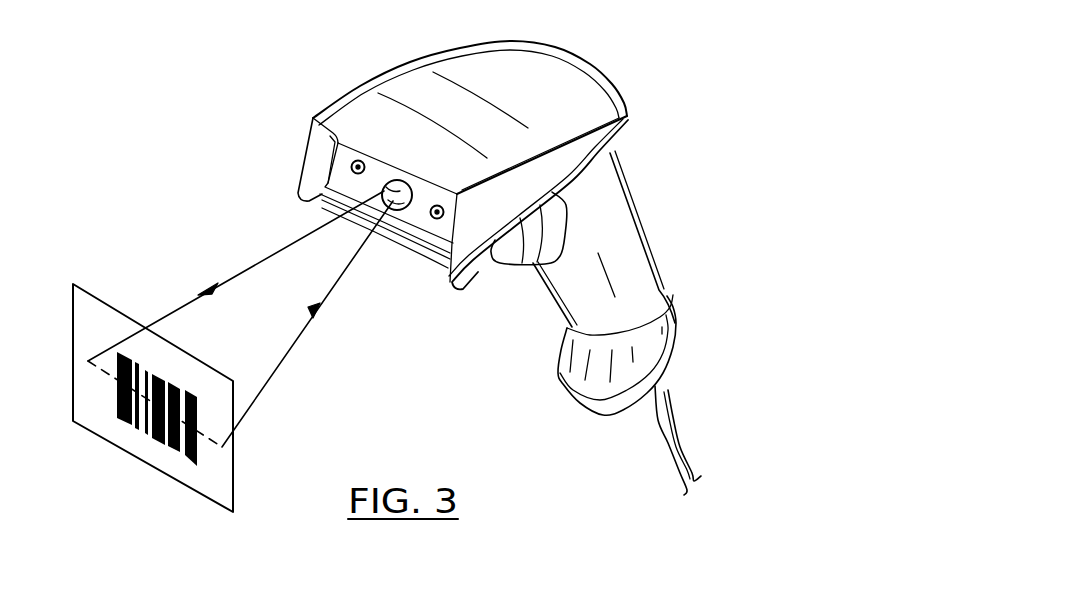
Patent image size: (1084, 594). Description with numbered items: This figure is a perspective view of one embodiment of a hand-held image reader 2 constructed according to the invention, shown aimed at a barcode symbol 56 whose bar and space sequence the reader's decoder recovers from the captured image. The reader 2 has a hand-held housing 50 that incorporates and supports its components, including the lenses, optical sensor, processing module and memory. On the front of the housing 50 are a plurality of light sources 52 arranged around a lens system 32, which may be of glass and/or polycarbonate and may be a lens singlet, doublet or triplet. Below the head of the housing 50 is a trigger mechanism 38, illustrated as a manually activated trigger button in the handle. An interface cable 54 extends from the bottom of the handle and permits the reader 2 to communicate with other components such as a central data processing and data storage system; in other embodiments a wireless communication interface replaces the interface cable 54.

The hand-held image reader 2 is at (617, 73).
The lens system 32 is at (392, 208).
The trigger mechanism 38 is at (514, 262).
The housing 50 is at (566, 184).
The light sources 52 is at (360, 160).
The interface cable 54 is at (683, 453).
The barcode symbol 56 is at (192, 462).